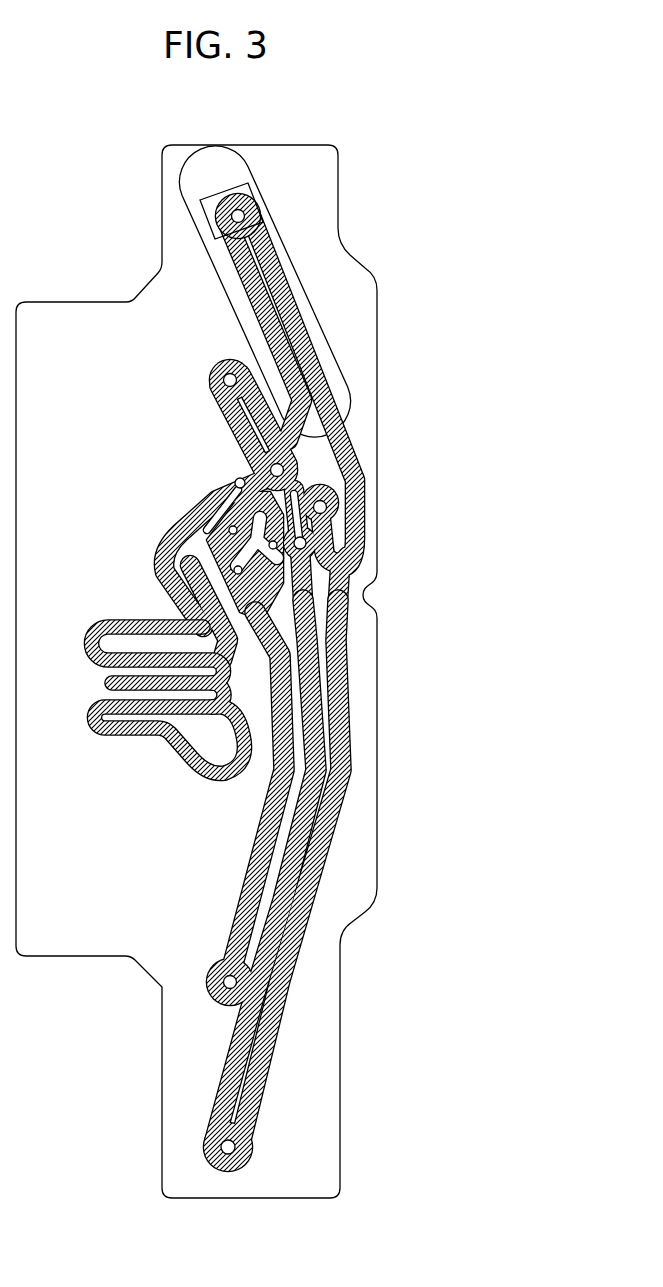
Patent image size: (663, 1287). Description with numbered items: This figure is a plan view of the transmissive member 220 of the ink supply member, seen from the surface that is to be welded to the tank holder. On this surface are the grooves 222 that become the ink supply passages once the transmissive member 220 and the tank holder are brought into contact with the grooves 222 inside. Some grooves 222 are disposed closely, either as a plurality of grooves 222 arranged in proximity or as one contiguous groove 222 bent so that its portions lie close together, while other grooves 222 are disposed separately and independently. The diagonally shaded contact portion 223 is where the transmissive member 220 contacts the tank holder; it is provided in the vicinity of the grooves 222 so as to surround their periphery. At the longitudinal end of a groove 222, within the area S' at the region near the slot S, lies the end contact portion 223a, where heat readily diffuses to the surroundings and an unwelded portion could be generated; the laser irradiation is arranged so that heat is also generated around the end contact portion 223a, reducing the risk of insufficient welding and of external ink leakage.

The transmissive member 220 is at (362, 310).
The grooves 222 is at (318, 668).
The contact portion 223 is at (367, 500).
The end contact portion 223a is at (252, 201).
The slot S is at (313, 291).
The area S' is at (183, 196).